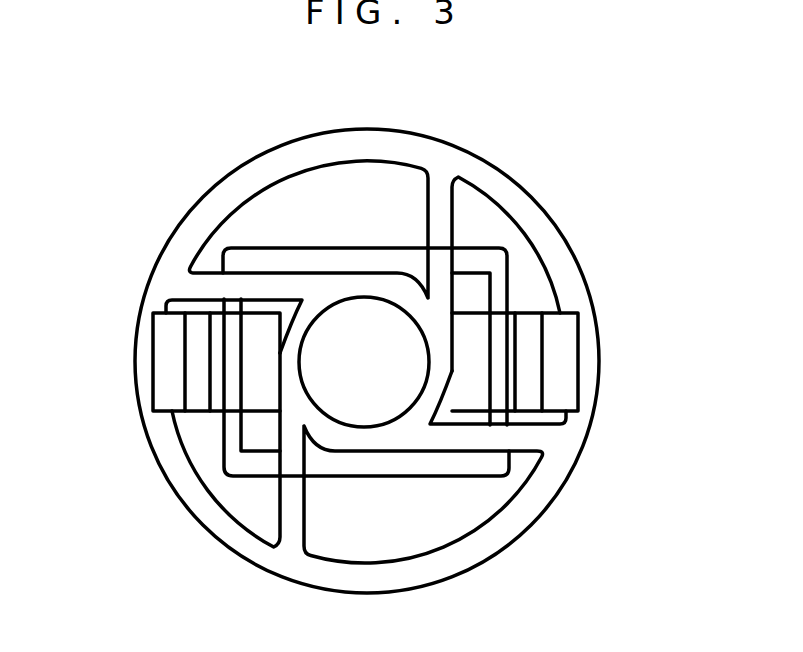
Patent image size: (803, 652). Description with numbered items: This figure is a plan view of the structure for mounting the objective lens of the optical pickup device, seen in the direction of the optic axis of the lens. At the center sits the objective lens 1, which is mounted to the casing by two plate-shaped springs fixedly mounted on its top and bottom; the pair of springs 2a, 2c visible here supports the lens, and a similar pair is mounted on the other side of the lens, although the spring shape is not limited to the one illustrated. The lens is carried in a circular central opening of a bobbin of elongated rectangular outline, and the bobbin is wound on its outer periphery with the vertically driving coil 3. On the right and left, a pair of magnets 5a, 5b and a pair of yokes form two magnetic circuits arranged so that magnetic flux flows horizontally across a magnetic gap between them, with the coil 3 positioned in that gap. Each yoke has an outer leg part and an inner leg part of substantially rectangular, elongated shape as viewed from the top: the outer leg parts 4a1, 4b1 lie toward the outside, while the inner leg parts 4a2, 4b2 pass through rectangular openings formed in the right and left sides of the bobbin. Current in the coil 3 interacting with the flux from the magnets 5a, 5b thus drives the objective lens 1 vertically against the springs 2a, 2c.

The objective lens 1 is at (387, 390).
The plate-shaped spring 2a is at (543, 236).
The plate-shaped spring 2c is at (163, 284).
The vertically driving coil 3 is at (256, 247).
The outer leg part of yoke 4a1 is at (573, 383).
The inner leg part of yoke 4a2 is at (470, 393).
The outer leg part of yoke 4b1 is at (162, 378).
The inner leg part of yoke 4b2 is at (261, 390).
The magnet 5a is at (533, 340).
The magnet 5b is at (200, 395).